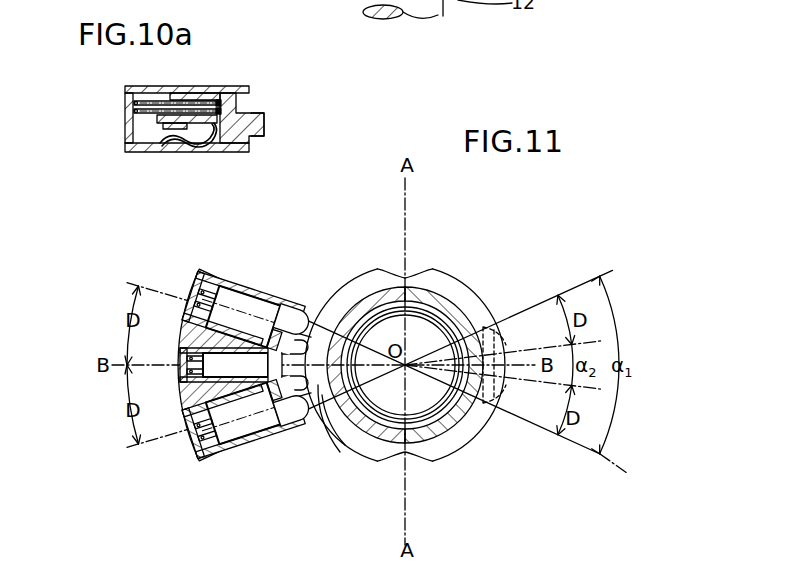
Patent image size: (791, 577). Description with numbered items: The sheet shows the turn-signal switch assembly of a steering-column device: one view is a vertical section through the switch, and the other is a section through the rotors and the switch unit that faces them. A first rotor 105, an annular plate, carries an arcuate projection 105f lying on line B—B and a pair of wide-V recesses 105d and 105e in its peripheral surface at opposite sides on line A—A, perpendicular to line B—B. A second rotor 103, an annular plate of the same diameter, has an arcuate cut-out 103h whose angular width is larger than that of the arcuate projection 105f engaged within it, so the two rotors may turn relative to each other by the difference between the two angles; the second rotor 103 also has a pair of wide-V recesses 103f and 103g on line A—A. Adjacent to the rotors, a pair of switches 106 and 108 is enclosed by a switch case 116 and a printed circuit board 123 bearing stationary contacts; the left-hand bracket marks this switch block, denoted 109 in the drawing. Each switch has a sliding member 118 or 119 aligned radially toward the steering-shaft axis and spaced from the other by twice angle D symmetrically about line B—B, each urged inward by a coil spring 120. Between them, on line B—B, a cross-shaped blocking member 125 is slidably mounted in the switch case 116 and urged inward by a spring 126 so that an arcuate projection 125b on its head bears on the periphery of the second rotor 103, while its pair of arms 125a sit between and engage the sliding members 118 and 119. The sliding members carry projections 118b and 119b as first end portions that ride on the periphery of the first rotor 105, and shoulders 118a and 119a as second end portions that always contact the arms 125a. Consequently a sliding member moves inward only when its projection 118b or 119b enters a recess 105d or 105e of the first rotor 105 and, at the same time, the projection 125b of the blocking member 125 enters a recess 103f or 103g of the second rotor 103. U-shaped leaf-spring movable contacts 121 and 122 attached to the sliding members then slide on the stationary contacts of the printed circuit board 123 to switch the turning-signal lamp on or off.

In FIG. 11, the second rotor 103 is at (435, 339).
In FIG. 11, the first rotor 105 is at (457, 263).
In FIG. 11, the recess 103g is at (466, 231).
In FIG. 11, the recess 105e is at (413, 273).
In FIG. 11, the recess 103f is at (468, 482).
In FIG. 11, the recess 105d is at (418, 461).
In FIG. 11, the arcuate cut-out 103h is at (486, 330).
In FIG. 11, the arcuate projection 105f is at (510, 385).
In FIG. 11, the switch 106 is at (267, 387).
In FIG. 11, the switch 108 is at (230, 282).
In FIG. 11, the holder block 109 is at (58, 283).
In FIG. 10A, the switch case 116 is at (205, 86).
In FIG. 11, the switch case 116 is at (196, 283).
In FIG. 10A, the sliding member 118 is at (228, 97).
In FIG. 11, the sliding member 118 is at (235, 437).
In FIG. 11, the shoulder 118a is at (272, 418).
In FIG. 10A, the projection 118b is at (323, 131).
In FIG. 11, the projection 118b is at (303, 405).
In FIG. 10A, the sliding member 119 is at (244, 84).
In FIG. 11, the sliding member 119 is at (259, 300).
In FIG. 11, the shoulder 119a is at (281, 313).
In FIG. 10A, the projection 119b is at (271, 129).
In FIG. 11, the projection 119b is at (314, 308).
In FIG. 10A, the coil spring 120 is at (145, 101).
In FIG. 11, the coil spring 120 is at (215, 286).
In FIG. 10A, the movable contact 121 is at (211, 152).
In FIG. 10A, the movable contact 122 is at (208, 144).
In FIG. 10A, the printed circuit board 123 is at (157, 152).
In FIG. 11, the blocking member 125 is at (174, 340).
In FIG. 11, the arm 125a is at (252, 403).
In FIG. 11, the projection 125b is at (328, 402).
In FIG. 11, the spring 126 is at (214, 376).